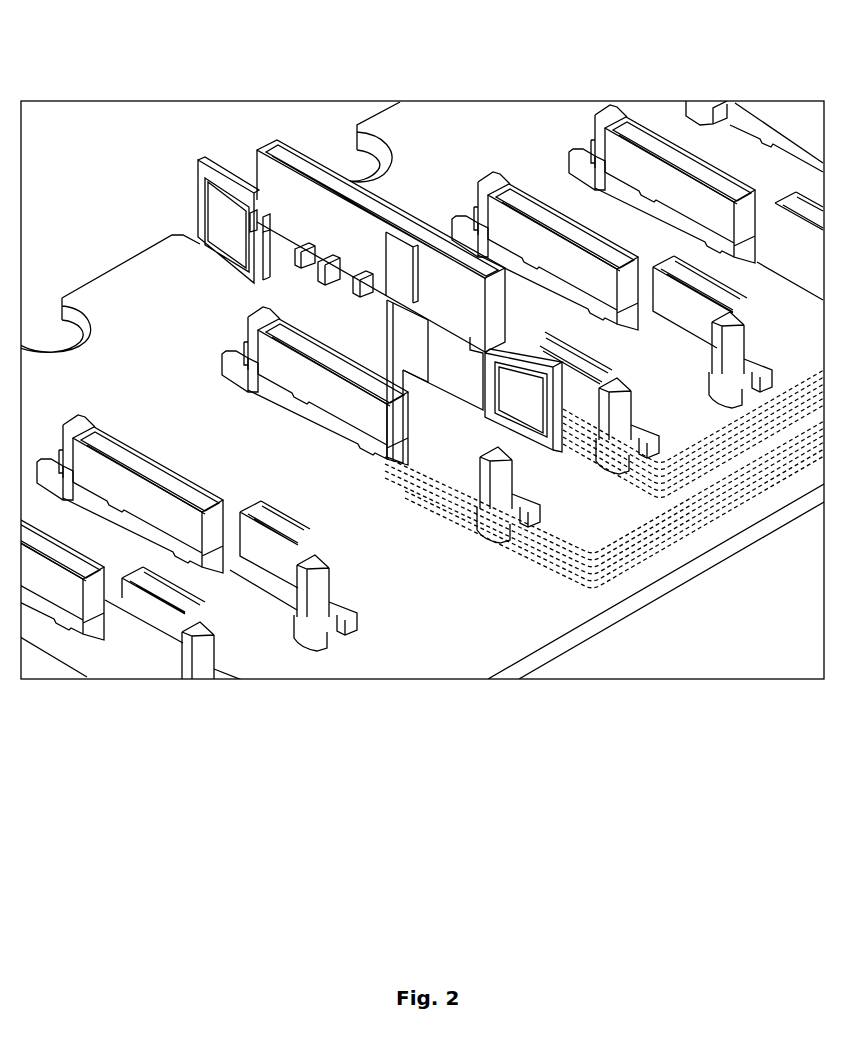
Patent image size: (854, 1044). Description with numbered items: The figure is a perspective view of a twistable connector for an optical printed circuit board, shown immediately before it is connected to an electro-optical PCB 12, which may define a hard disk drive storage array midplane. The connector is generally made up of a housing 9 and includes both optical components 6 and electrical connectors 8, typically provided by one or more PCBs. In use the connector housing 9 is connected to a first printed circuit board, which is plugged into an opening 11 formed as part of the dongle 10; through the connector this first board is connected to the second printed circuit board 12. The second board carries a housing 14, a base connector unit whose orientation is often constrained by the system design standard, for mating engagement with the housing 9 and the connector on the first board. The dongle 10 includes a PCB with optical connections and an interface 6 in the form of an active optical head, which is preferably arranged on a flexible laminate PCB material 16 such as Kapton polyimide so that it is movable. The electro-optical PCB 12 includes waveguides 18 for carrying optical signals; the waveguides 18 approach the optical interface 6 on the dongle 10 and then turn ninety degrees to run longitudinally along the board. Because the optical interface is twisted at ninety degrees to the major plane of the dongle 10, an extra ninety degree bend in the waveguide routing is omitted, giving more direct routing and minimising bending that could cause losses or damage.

The optical interface 6 is at (400, 392).
The electrical connectors 8 is at (262, 295).
The housing 9 is at (553, 443).
The dongle 10 is at (214, 165).
The opening 11 is at (288, 152).
The electro-optical PCB 12 is at (122, 283).
The housing 14 is at (455, 478).
The flexible laminate PCB material 16 is at (408, 331).
The waveguides 18 is at (620, 573).